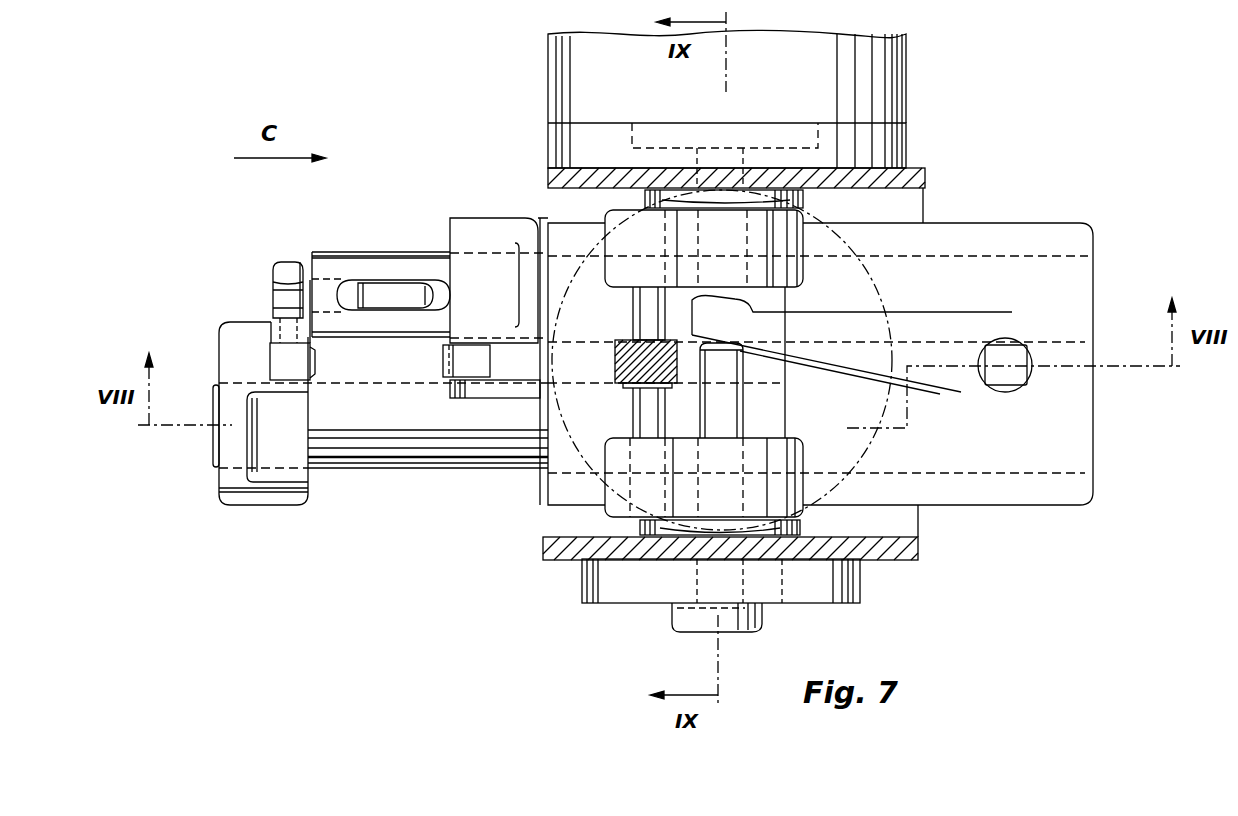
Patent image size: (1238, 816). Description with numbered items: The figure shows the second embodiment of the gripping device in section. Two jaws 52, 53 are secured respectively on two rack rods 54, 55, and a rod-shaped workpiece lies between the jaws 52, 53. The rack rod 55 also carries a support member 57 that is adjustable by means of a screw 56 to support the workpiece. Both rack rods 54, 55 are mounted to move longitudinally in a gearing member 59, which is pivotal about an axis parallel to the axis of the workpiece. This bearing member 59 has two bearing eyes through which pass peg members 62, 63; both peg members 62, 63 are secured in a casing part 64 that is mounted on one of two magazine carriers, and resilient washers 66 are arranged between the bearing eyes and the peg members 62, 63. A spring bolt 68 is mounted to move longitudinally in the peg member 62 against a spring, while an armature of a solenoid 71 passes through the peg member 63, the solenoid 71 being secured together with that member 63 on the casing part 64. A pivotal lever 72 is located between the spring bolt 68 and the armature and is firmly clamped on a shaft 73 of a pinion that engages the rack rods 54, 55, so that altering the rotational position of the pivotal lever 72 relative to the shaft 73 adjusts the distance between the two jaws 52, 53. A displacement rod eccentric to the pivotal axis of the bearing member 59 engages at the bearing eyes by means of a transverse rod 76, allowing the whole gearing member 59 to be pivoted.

The jaw 52 is at (278, 352).
The jaw 53 is at (456, 383).
The rack rod 54 is at (367, 450).
The rack rod 55 is at (360, 262).
The screw 56 is at (290, 268).
The support member 57 is at (402, 290).
The gearing member 59 is at (1005, 245).
The peg member 62 is at (853, 580).
The peg member 63 is at (880, 143).
The casing part 64 is at (912, 552).
The resilient washers 66 is at (805, 204).
The spring bolt 68 is at (740, 408).
The solenoid 71 is at (888, 80).
The pivotal lever 72 is at (930, 332).
The shaft 73 is at (1008, 358).
The transverse rod 76 is at (633, 313).